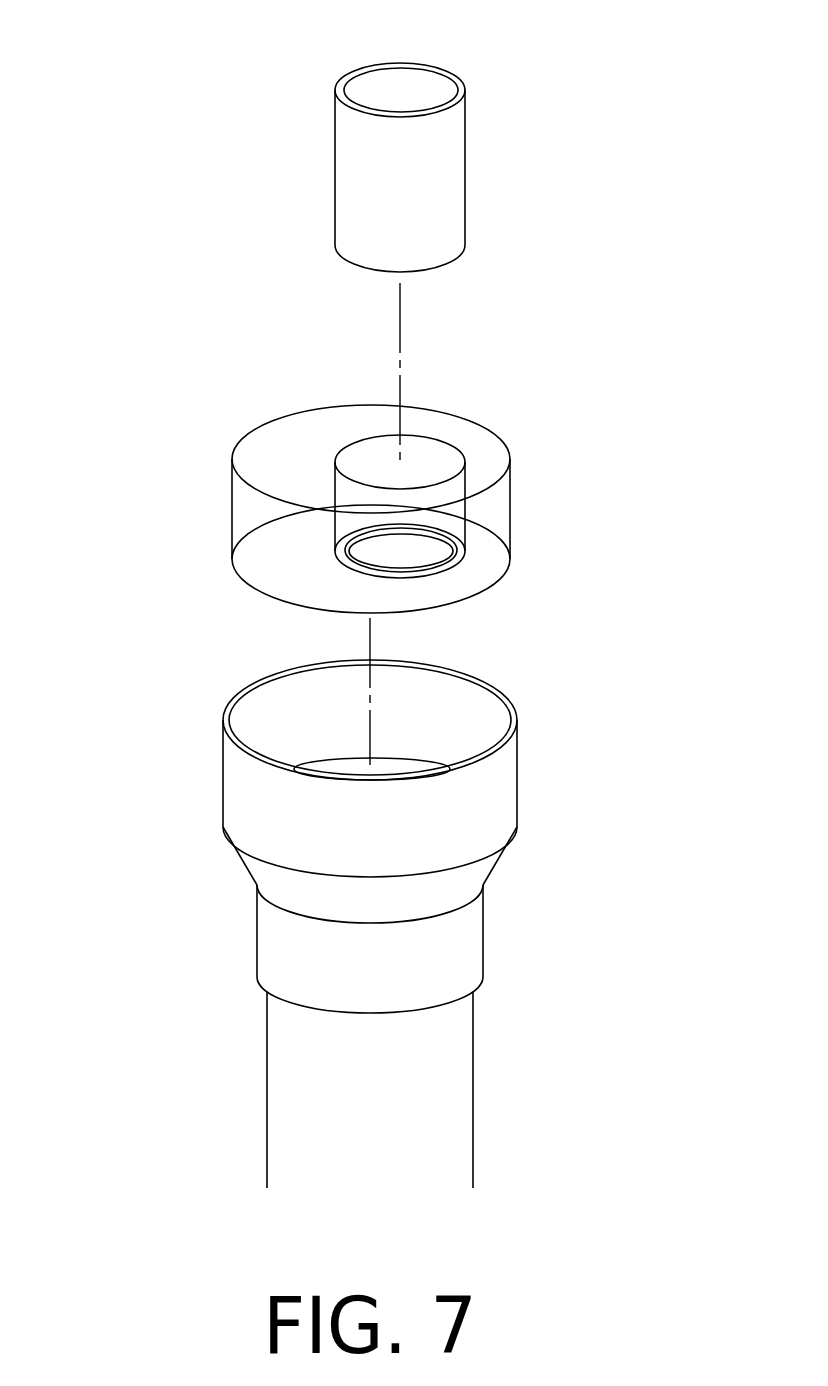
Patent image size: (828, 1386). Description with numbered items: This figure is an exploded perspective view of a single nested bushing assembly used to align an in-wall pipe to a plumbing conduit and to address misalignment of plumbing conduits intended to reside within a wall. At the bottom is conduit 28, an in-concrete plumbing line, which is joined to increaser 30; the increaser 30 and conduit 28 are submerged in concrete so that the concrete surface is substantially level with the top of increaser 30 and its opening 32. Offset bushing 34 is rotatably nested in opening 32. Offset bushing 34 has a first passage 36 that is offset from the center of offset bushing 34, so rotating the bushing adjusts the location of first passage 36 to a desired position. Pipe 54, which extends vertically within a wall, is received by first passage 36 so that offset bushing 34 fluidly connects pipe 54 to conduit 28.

The conduit 28 is at (468, 1065).
The increaser 30 is at (446, 836).
The opening 32 is at (299, 699).
The offset bushing 34 is at (450, 506).
The first passage 36 is at (276, 437).
The pipe 54 is at (502, 136).